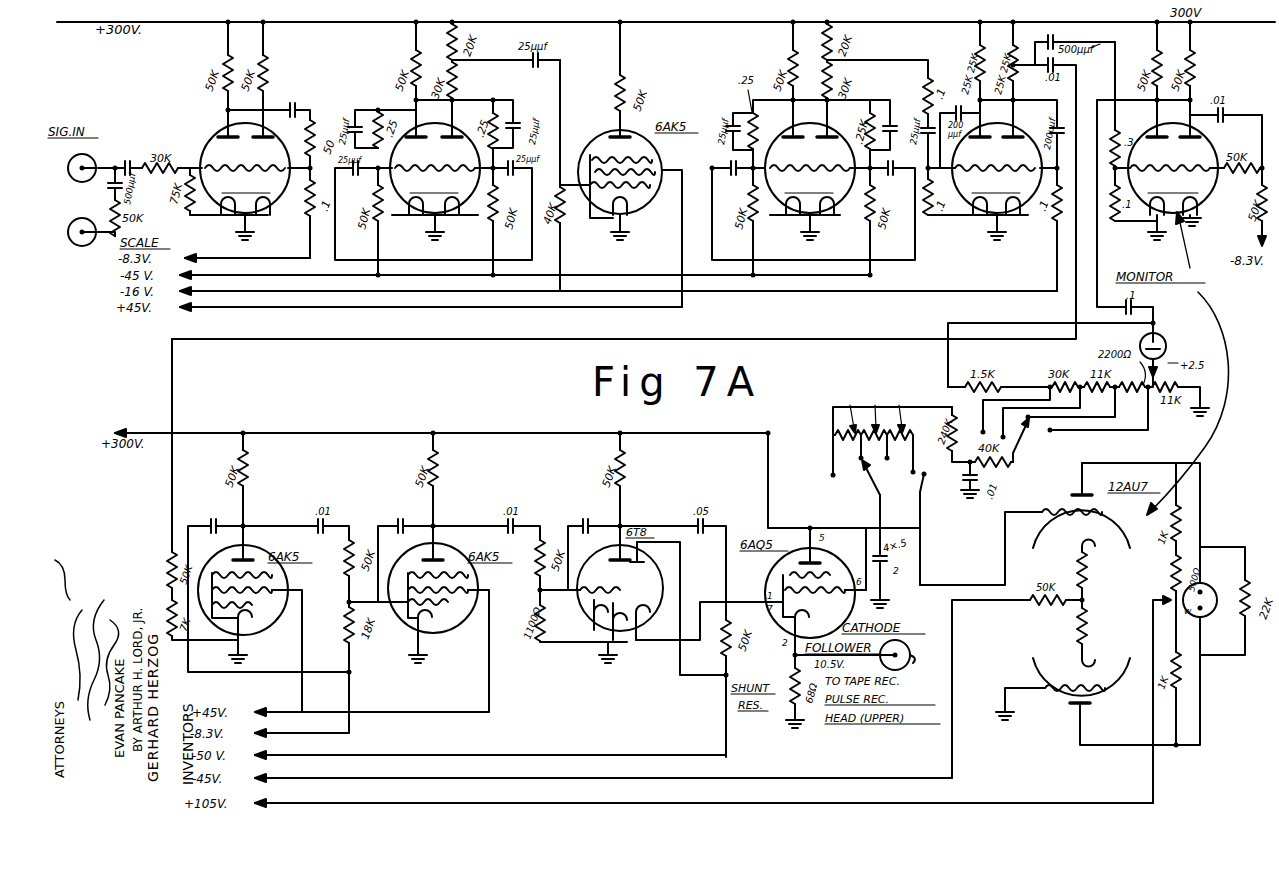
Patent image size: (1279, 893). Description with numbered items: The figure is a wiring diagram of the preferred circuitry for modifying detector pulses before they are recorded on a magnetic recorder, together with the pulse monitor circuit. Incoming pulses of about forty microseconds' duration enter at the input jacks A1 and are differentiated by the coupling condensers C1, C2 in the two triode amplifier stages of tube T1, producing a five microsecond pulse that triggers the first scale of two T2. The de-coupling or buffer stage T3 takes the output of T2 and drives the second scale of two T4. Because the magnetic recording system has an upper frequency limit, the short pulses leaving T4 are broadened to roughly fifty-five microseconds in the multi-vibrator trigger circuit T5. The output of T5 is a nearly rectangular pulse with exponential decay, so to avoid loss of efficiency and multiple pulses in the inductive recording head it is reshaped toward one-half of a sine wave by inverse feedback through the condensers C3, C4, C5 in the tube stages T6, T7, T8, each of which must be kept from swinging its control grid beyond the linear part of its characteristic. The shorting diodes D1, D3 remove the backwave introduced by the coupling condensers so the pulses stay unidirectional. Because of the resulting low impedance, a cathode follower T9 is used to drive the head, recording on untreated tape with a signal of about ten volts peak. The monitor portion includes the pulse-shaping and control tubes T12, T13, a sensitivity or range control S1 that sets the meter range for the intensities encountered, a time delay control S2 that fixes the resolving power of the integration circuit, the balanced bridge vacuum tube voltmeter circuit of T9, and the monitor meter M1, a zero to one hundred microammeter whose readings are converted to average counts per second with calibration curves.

The two-triode amplifier stage tube T1 is at (245, 175).
The first scale of two T2 is at (439, 170).
The de-coupling or buffer stage T3 is at (619, 181).
The second scale of two T4 is at (811, 170).
The multi-vibrator trigger circuit T5 is at (997, 170).
The wave-shaping tube stage T6 is at (243, 594).
The wave-shaping tube stage T7 is at (433, 594).
The wave-shaping tube stage T8 is at (616, 594).
The cathode follower / balanced bridge vacuum tube voltmeter circuit T9 is at (1078, 594).
The pulse-shaping and control tube T12 is at (1173, 170).
The pulse-shaping and control tube T13 is at (1166, 347).
The coupling condenser C1 is at (129, 154).
The coupling condenser C2 is at (303, 99).
The inverse feedback condenser C3 is at (211, 526).
The inverse feedback condenser C4 is at (399, 526).
The inverse feedback condenser C5 is at (583, 526).
The shorting diode D1 is at (598, 620).
The shorting diode D3 is at (649, 612).
The sensitivity or range control S1 is at (1065, 424).
The time delay control S2 is at (889, 477).
The monitor meter M1 is at (1195, 587).
The signal input jacks A1 is at (95, 222).